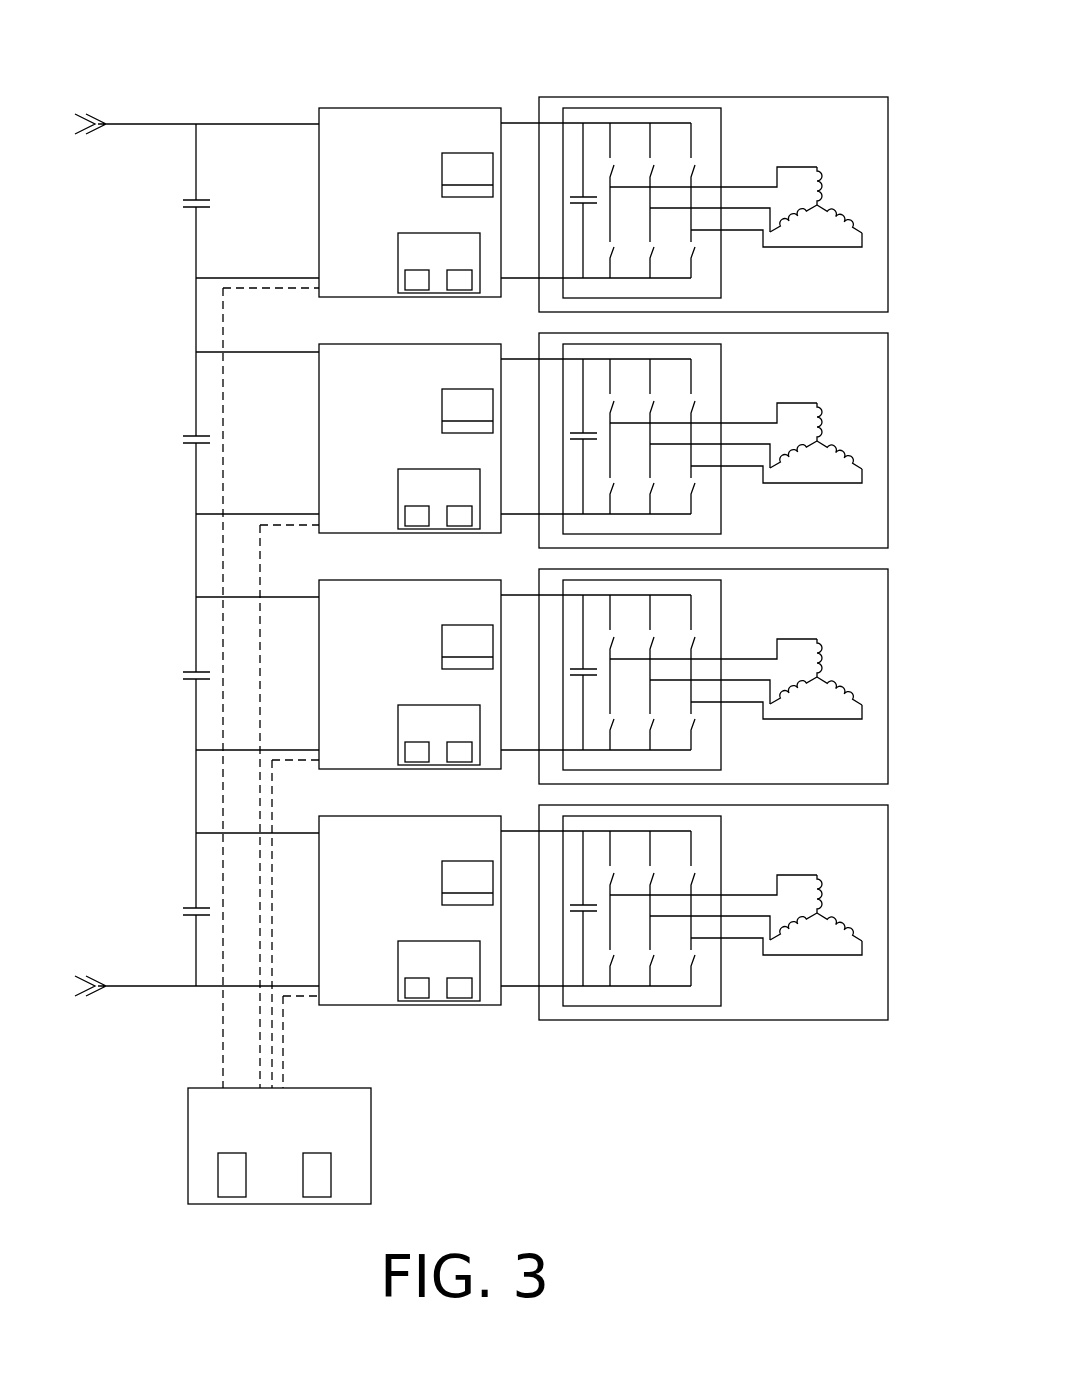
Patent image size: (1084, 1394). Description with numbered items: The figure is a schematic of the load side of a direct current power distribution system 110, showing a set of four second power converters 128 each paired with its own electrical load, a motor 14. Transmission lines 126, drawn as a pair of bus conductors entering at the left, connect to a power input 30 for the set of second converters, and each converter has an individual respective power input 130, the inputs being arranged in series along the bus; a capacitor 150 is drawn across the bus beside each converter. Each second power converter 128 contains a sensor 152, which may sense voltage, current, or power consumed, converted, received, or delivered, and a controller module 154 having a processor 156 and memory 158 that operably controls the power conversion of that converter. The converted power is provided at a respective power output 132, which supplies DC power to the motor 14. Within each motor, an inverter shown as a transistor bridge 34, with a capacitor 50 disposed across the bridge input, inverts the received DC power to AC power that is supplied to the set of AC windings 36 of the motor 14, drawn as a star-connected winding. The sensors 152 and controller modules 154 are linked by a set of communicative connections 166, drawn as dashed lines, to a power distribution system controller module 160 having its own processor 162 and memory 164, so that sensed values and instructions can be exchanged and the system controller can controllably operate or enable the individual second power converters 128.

The power distribution system 110 is at (640, 51).
The power input 30 is at (198, 106).
The transmission lines 126 is at (163, 124).
The bus capacitor 150 is at (183, 203).
The power input 130 is at (317, 107).
The second power converter 128 is at (387, 272).
The sensor 152 is at (467, 529).
The controller module 154 is at (464, 264).
The processor 156 is at (416, 291).
The memory 158 is at (468, 311).
The power output 132 is at (511, 102).
The transistor bridge 34 is at (727, 124).
The capacitor 50 is at (574, 197).
The AC windings 36 is at (824, 199).
The motor 14 is at (872, 292).
The communicative connections 166 is at (218, 1048).
The power distribution system controller module 160 is at (300, 1183).
The processor 162 is at (230, 1198).
The memory 164 is at (316, 1198).